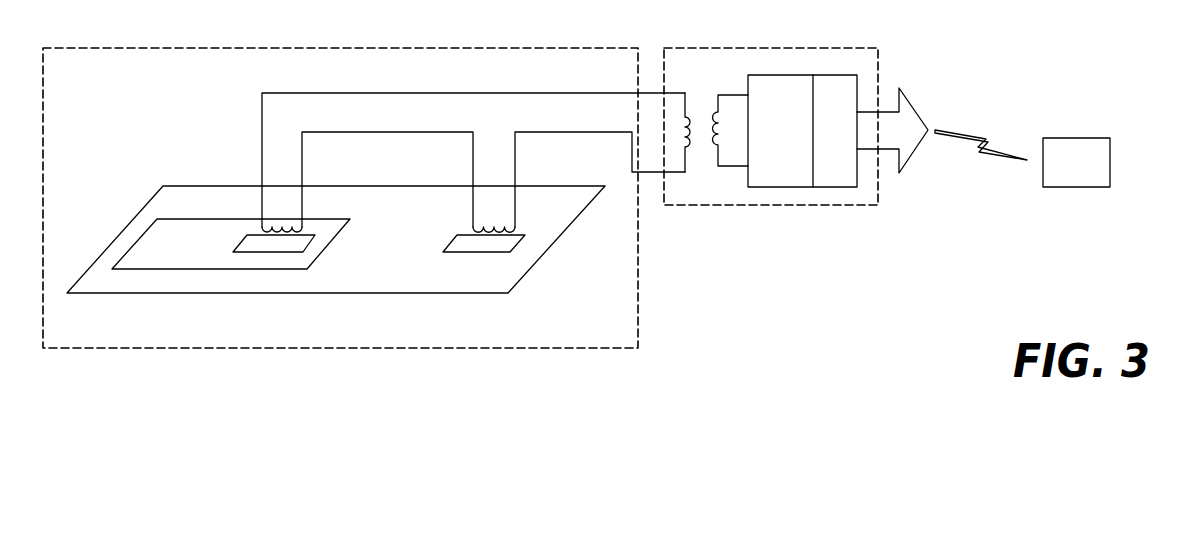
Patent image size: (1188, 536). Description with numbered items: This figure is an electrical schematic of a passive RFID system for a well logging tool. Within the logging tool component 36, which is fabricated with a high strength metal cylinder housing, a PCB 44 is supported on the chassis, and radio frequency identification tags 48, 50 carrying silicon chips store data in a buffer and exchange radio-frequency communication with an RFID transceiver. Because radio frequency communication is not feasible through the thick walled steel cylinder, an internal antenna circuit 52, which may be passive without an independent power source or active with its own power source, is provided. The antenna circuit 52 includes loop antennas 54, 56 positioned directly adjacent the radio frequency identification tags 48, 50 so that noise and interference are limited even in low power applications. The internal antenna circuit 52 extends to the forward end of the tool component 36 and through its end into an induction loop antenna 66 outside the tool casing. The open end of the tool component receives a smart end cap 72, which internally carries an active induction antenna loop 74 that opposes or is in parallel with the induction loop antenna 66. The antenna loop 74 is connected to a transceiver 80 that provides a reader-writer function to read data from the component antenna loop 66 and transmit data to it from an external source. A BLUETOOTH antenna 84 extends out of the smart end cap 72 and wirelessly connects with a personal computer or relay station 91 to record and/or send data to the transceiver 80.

The logging tool component 36 is at (368, 353).
The PCB 44 is at (312, 266).
The radio frequency identification tag 48 is at (322, 237).
The radio frequency identification tag 50 is at (527, 248).
The internal antenna circuit 52 is at (430, 93).
The loop antenna 54 is at (259, 224).
The loop antenna 56 is at (470, 227).
The induction loop antenna 66 is at (684, 118).
The smart end cap 72 is at (884, 70).
The active induction antenna loop 74 is at (720, 120).
The transceiver 80 is at (789, 178).
The BLUETOOTH antenna 84 is at (906, 152).
The personal computer or relay station 91 is at (1080, 180).